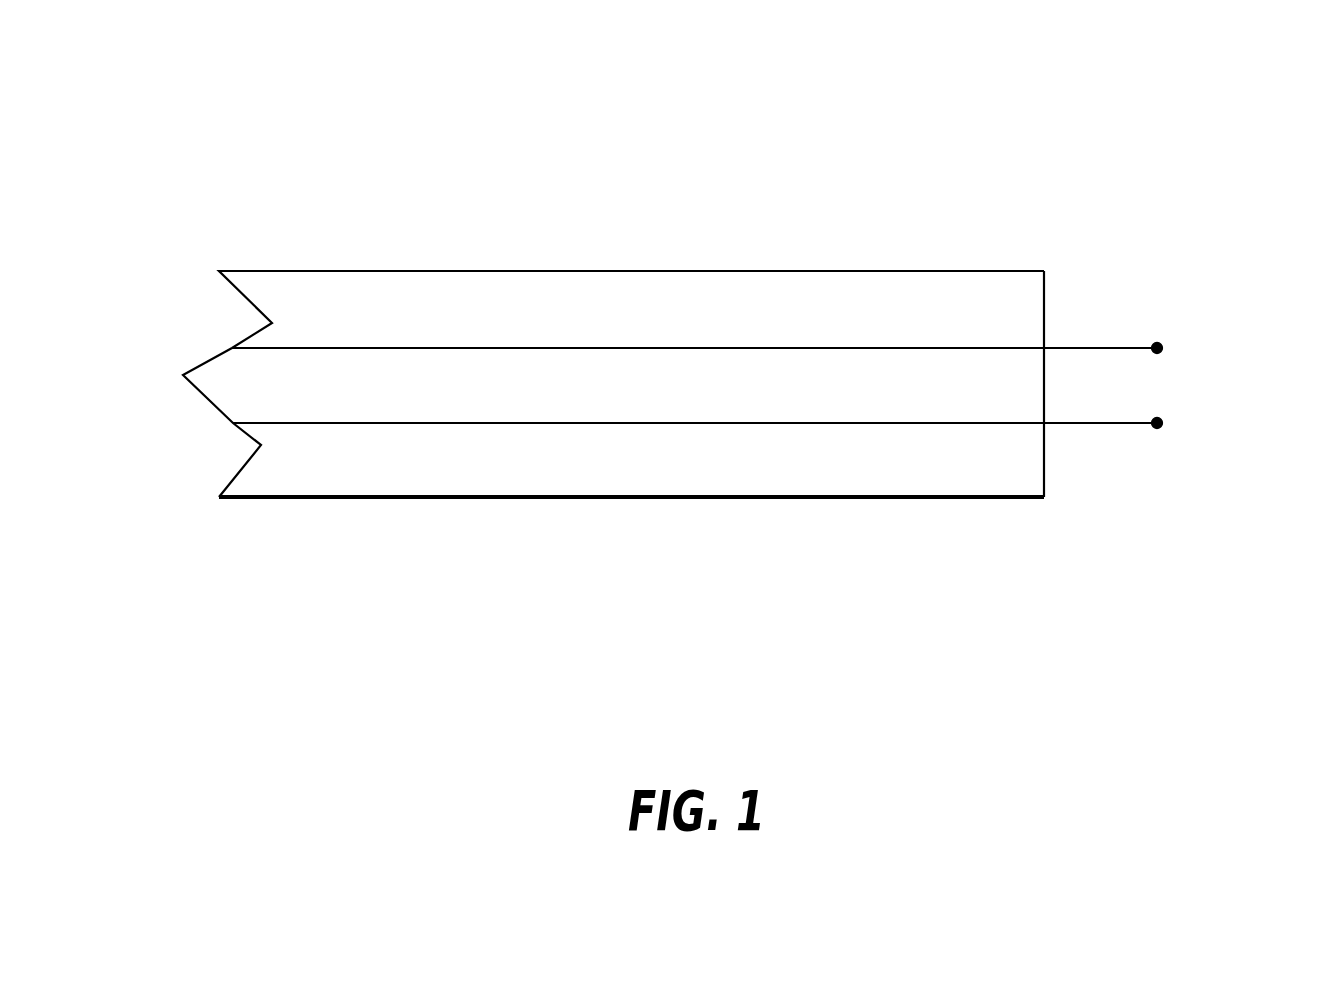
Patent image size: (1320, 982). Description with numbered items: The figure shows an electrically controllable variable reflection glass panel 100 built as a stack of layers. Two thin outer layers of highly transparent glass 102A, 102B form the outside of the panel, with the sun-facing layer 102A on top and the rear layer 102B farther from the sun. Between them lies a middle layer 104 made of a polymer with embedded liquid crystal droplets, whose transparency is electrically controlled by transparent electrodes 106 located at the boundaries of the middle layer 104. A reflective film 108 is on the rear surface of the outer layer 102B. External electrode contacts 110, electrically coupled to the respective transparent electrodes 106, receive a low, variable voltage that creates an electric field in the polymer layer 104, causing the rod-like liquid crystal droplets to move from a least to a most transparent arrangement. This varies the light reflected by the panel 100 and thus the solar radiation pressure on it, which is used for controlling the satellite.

The electrically controllable variable reflection glass panel 100 is at (672, 99).
The outer layer of highly transparent glass 102A is at (637, 309).
The outer layer of highly transparent glass 102B is at (637, 460).
The middle layer 104 is at (348, 207).
The transparent electrodes 106 is at (1005, 412).
The reflective film 108 is at (650, 507).
The external electrode contacts 110 is at (1164, 385).